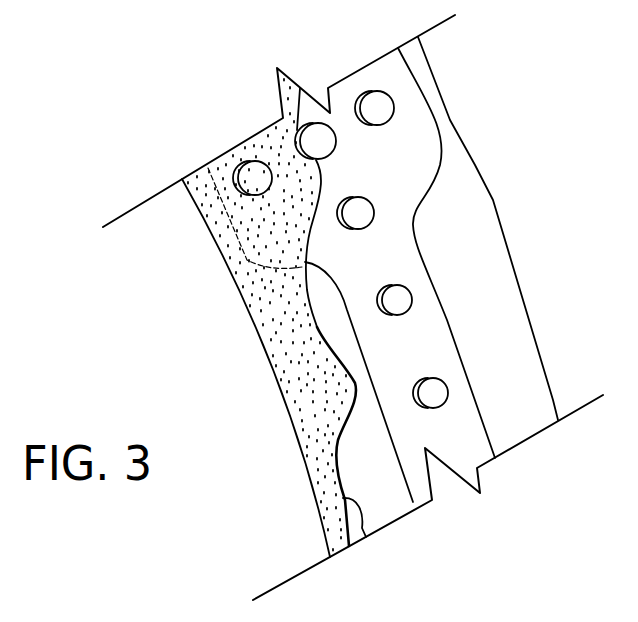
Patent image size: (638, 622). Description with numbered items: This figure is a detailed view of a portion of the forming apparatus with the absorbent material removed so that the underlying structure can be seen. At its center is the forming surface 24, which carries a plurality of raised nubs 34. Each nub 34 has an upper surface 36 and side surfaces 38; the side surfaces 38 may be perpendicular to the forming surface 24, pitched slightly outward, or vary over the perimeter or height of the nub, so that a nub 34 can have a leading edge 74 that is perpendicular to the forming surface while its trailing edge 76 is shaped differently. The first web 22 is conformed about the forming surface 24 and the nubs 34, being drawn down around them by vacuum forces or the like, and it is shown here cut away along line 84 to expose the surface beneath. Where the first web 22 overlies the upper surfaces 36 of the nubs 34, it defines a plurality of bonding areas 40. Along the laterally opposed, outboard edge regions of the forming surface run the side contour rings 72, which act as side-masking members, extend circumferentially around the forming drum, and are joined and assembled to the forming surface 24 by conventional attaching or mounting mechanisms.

The first web 22 is at (334, 399).
The forming surface 24 is at (425, 358).
The raised nub 34 is at (375, 215).
The upper surface 36 is at (413, 303).
The side surface 38 is at (343, 195).
The bonding area 40 is at (250, 184).
The side contour ring 72 is at (492, 263).
The leading edge 74 is at (367, 97).
The trailing edge 76 is at (392, 124).
The cut-away line 84 is at (364, 530).